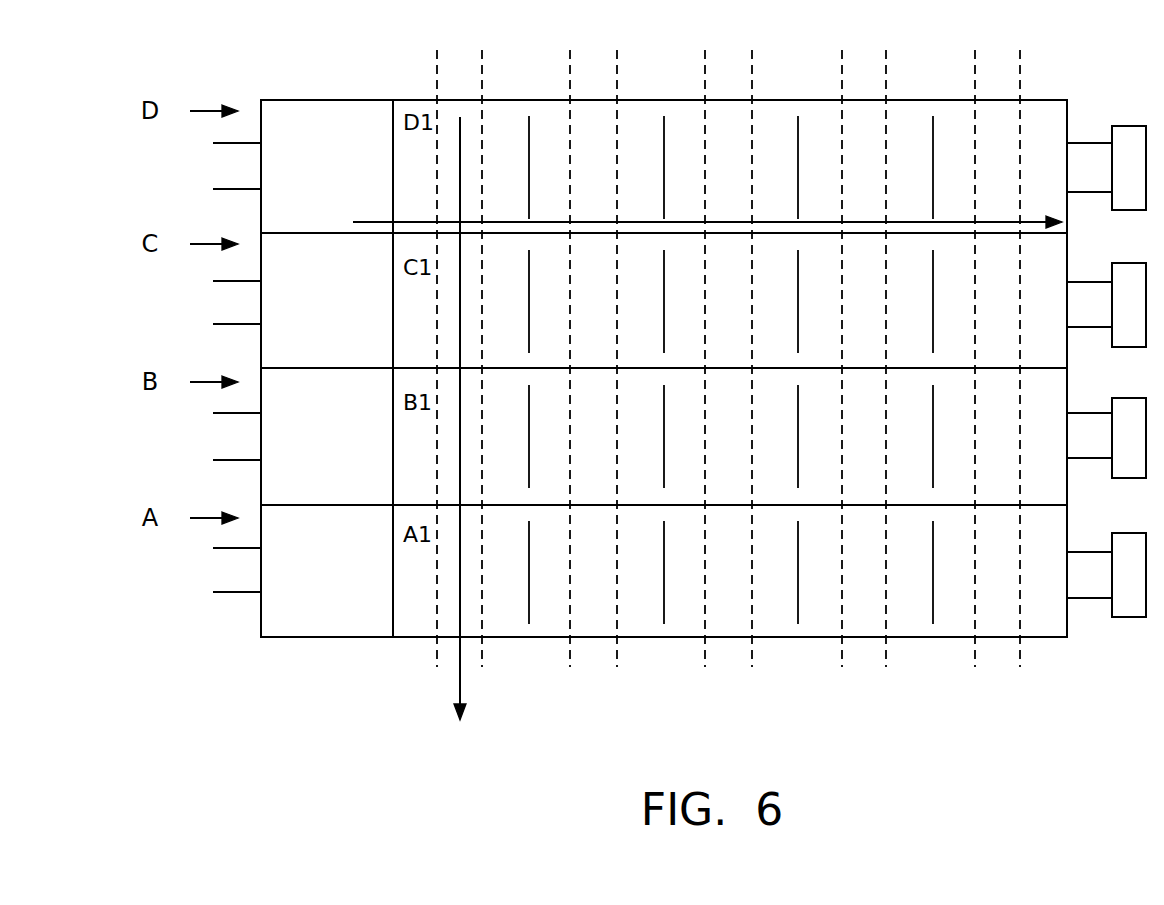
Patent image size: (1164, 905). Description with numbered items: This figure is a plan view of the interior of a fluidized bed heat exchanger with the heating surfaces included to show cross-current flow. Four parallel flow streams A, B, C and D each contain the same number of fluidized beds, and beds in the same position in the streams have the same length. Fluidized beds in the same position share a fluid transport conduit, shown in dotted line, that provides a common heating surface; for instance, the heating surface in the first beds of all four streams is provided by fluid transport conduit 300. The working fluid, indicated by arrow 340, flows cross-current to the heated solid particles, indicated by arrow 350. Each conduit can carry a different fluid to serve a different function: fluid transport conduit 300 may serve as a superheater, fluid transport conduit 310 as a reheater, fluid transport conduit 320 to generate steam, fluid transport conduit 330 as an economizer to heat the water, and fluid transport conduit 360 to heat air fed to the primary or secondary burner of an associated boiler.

The fluid transport conduit 300 is at (459, 345).
The fluid transport conduit 310 is at (594, 345).
The fluid transport conduit 320 is at (728, 345).
The fluid transport conduit 330 is at (864, 345).
The fluid transport conduit 360 is at (997, 345).
The arrow indicating working fluid flow 340 is at (455, 672).
The arrow indicating heated solid particle flow 350 is at (373, 219).